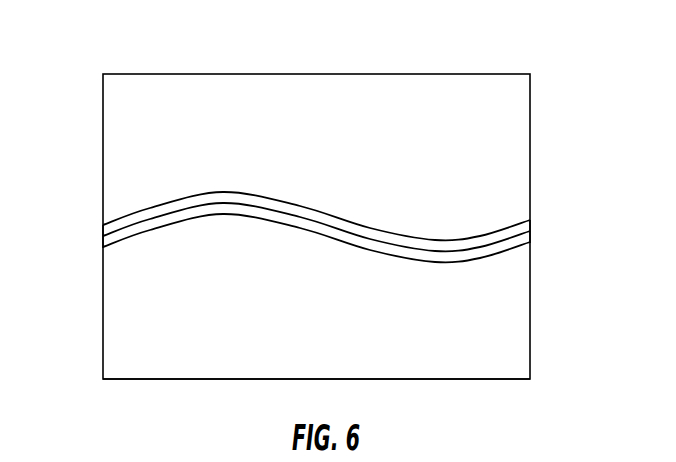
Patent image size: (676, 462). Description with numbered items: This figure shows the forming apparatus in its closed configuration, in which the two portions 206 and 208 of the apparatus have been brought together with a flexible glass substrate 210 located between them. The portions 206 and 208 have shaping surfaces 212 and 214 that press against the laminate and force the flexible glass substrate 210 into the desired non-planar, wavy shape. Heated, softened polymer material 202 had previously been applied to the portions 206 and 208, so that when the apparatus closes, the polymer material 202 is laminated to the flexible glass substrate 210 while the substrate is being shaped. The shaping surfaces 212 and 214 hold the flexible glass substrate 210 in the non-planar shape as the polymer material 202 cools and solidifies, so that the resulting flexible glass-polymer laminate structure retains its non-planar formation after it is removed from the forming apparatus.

The portion of the forming apparatus 208 is at (467, 100).
The portion of the forming apparatus 206 is at (466, 352).
The flexible glass substrate 210 is at (237, 191).
The polymer material 202 is at (207, 213).
The shaping surface 212 is at (126, 238).
The shaping surface 214 is at (508, 225).